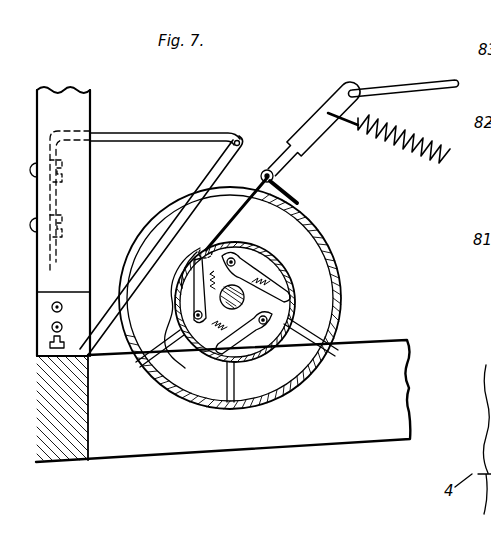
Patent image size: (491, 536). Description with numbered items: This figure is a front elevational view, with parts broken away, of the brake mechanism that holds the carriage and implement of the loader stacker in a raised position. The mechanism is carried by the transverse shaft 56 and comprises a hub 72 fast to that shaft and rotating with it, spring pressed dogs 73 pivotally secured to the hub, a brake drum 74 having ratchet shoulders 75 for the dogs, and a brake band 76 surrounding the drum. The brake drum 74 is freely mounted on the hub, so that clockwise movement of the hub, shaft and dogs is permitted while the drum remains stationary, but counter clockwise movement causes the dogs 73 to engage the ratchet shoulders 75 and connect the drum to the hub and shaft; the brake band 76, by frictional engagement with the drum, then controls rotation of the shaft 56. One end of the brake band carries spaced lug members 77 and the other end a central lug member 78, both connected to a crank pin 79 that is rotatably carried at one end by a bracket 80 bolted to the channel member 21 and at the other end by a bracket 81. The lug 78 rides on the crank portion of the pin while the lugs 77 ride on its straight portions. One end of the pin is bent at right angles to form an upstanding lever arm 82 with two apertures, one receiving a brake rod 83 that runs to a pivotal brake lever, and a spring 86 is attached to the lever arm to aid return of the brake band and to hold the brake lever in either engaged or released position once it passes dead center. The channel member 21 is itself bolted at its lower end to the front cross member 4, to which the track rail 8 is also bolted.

The front cross member 4 is at (61, 460).
The track rail 8 is at (385, 442).
The channel member 21 is at (70, 90).
The transverse shaft 56 is at (246, 301).
The hub 72 is at (166, 383).
The spring pressed dog 73 is at (280, 323).
The brake drum 74 is at (325, 365).
The ratchet shoulder 75 is at (270, 303).
The brake band 76 is at (288, 291).
The spaced lug member 77 is at (299, 196).
The central lug member 78 is at (243, 137).
The crank pin 79 is at (267, 169).
The bracket 80 is at (62, 202).
The bracket 81 is at (144, 286).
The lever arm 82 is at (323, 96).
The brake rod 83 is at (412, 82).
The spring 86 is at (449, 154).